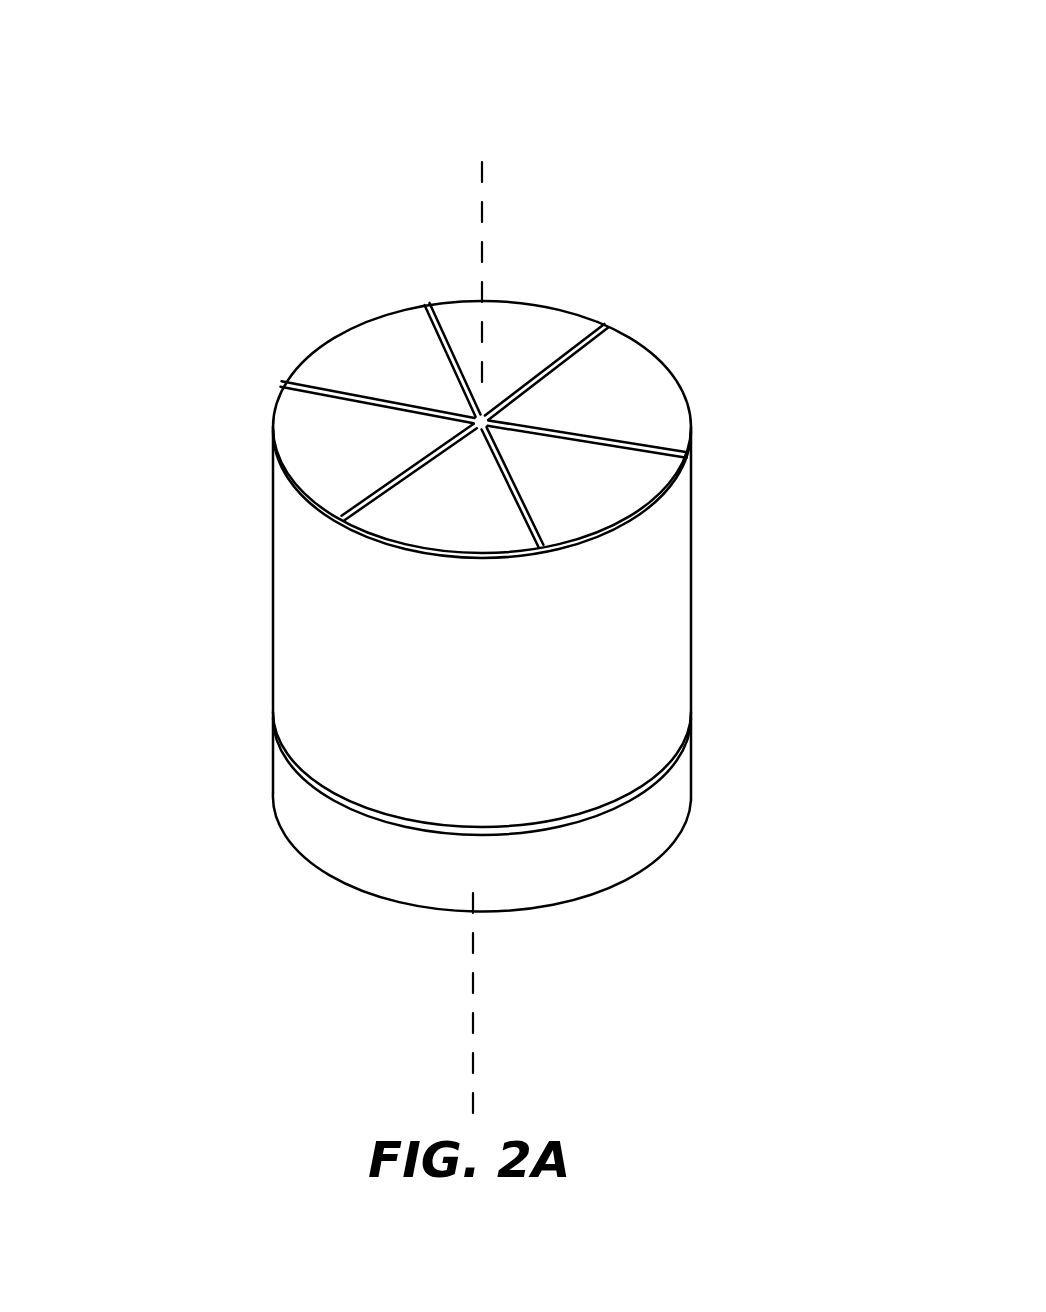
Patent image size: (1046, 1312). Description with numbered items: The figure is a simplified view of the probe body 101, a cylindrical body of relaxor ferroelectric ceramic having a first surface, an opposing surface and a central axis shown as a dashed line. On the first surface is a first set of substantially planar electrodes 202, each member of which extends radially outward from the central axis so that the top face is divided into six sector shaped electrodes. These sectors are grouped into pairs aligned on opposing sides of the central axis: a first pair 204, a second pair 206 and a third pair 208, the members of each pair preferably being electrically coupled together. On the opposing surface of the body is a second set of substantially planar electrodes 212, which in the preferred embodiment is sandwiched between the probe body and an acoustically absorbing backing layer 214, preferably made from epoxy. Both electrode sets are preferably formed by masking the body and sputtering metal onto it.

The probe body 101 is at (272, 588).
The first set of substantially planar electrodes 202 is at (672, 100).
The first pair of members of the first set of electrodes 204 is at (312, 430).
The second pair of members of the first set of electrodes 206 is at (397, 355).
The third pair of members of the first set of electrodes 208 is at (530, 335).
The second set of substantially planar electrodes 212 is at (668, 776).
The acoustically absorbing backing layer 214 is at (623, 837).